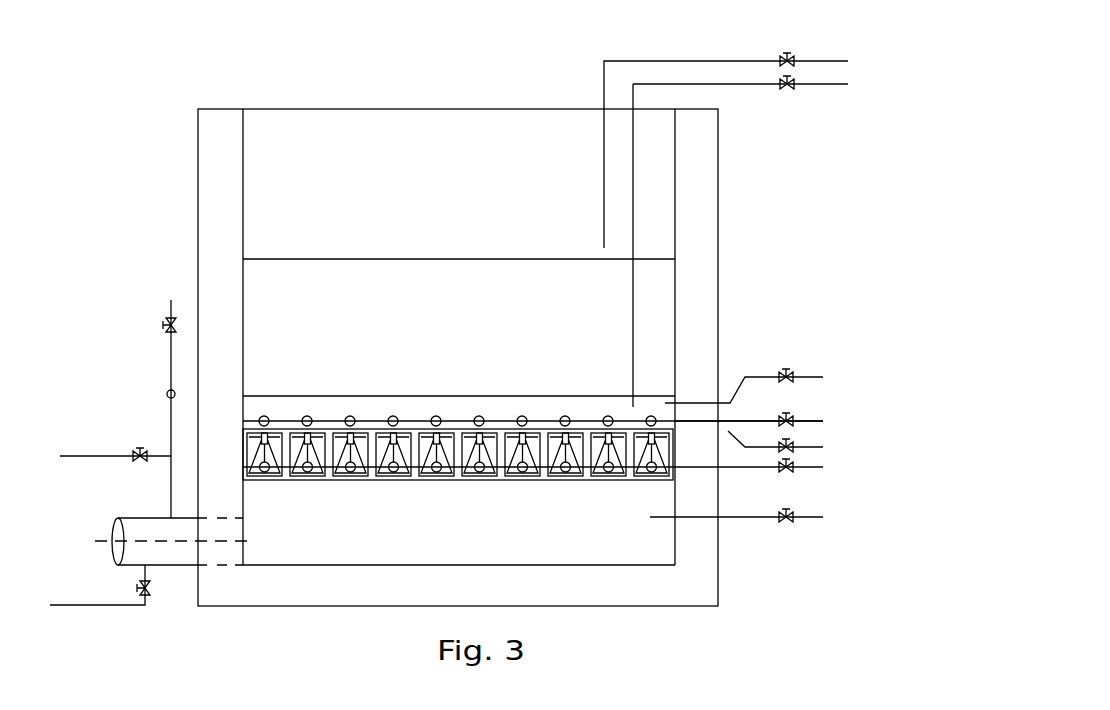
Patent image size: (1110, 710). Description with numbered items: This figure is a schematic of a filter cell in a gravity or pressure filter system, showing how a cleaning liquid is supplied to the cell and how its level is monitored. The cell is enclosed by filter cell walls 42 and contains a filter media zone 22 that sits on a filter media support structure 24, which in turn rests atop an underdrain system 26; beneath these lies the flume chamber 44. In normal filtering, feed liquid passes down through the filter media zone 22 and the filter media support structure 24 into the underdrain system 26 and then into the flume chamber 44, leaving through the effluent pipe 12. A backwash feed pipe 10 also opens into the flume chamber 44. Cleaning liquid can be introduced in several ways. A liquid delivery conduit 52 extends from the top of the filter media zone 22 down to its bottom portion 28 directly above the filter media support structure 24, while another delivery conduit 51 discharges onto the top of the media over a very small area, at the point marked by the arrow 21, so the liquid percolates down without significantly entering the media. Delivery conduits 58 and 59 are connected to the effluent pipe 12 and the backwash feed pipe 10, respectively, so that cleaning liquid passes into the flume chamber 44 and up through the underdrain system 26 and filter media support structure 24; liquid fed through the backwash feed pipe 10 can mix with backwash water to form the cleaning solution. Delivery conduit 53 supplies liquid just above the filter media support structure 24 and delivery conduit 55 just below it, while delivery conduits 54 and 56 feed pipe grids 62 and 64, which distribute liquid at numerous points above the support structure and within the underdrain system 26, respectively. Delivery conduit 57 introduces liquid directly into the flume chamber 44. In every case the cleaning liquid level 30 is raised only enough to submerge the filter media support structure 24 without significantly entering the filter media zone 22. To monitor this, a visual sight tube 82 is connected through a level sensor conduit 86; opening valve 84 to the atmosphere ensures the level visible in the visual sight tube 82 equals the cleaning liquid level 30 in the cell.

The backwash feed pipe 10 is at (182, 570).
The effluent pipe 12 is at (130, 514).
The liquid inlet level 21 is at (653, 247).
The filter media zone 22 is at (472, 306).
The filter media support structure 24 is at (580, 428).
The underdrain system 26 is at (647, 483).
The bottom portion of filter media zone 28 is at (647, 404).
The cleaning liquid level 30 is at (175, 392).
The filter cell walls 42 is at (207, 212).
The flume chamber 44 is at (345, 552).
The delivery conduit 51 is at (705, 60).
The liquid delivery conduit 52 is at (756, 85).
The delivery conduit 53 is at (770, 376).
The delivery conduit 54 is at (762, 420).
The delivery conduit 55 is at (764, 447).
The delivery conduit 56 is at (767, 467).
The delivery conduit 57 is at (745, 517).
The delivery conduit 58 is at (75, 455).
The delivery conduit 59 is at (68, 605).
The pipe grid 62 is at (483, 416).
The pipe grid 64 is at (520, 475).
The visual sight tube 82 is at (167, 392).
The valve 84 is at (170, 313).
The level sensor conduit 86 is at (158, 424).